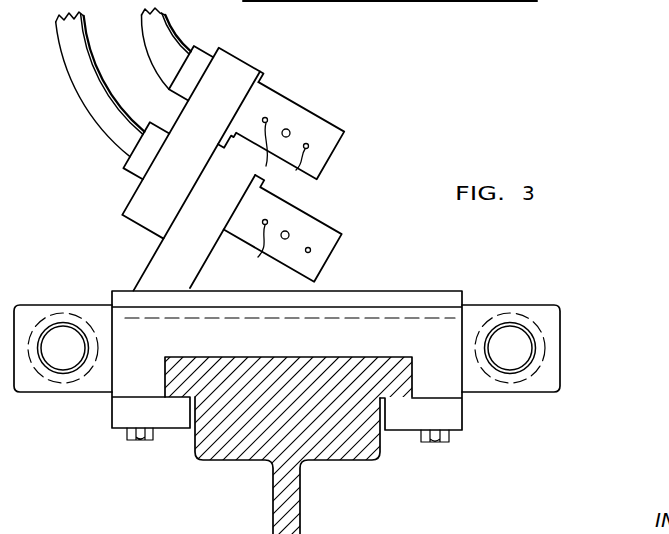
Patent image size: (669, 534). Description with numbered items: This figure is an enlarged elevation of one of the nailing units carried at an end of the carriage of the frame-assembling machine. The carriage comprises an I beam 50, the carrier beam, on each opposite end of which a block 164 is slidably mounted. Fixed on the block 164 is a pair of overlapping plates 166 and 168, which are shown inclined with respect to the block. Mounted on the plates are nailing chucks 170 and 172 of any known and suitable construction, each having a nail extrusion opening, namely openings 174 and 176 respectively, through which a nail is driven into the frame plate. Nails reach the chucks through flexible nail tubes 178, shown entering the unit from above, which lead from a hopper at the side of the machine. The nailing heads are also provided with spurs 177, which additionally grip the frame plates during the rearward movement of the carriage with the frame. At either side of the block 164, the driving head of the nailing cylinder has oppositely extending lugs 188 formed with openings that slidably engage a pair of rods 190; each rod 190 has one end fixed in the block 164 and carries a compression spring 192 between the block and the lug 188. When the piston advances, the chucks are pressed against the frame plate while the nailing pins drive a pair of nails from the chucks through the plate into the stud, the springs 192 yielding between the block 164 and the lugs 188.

The I beam 50 is at (282, 491).
The block 164 is at (421, 291).
The plate 166 is at (156, 252).
The plate 168 is at (128, 193).
The nailing chuck 170 is at (333, 236).
The nailing chuck 172 is at (323, 129).
The nail extrusion opening 174 is at (290, 231).
The nail extrusion opening 176 is at (291, 129).
The spurs 177 is at (271, 268).
The flexible nail tubes 178 is at (145, 29).
The lugs 188 is at (48, 305).
The rods 190 is at (60, 368).
The compression spring 192 is at (80, 315).